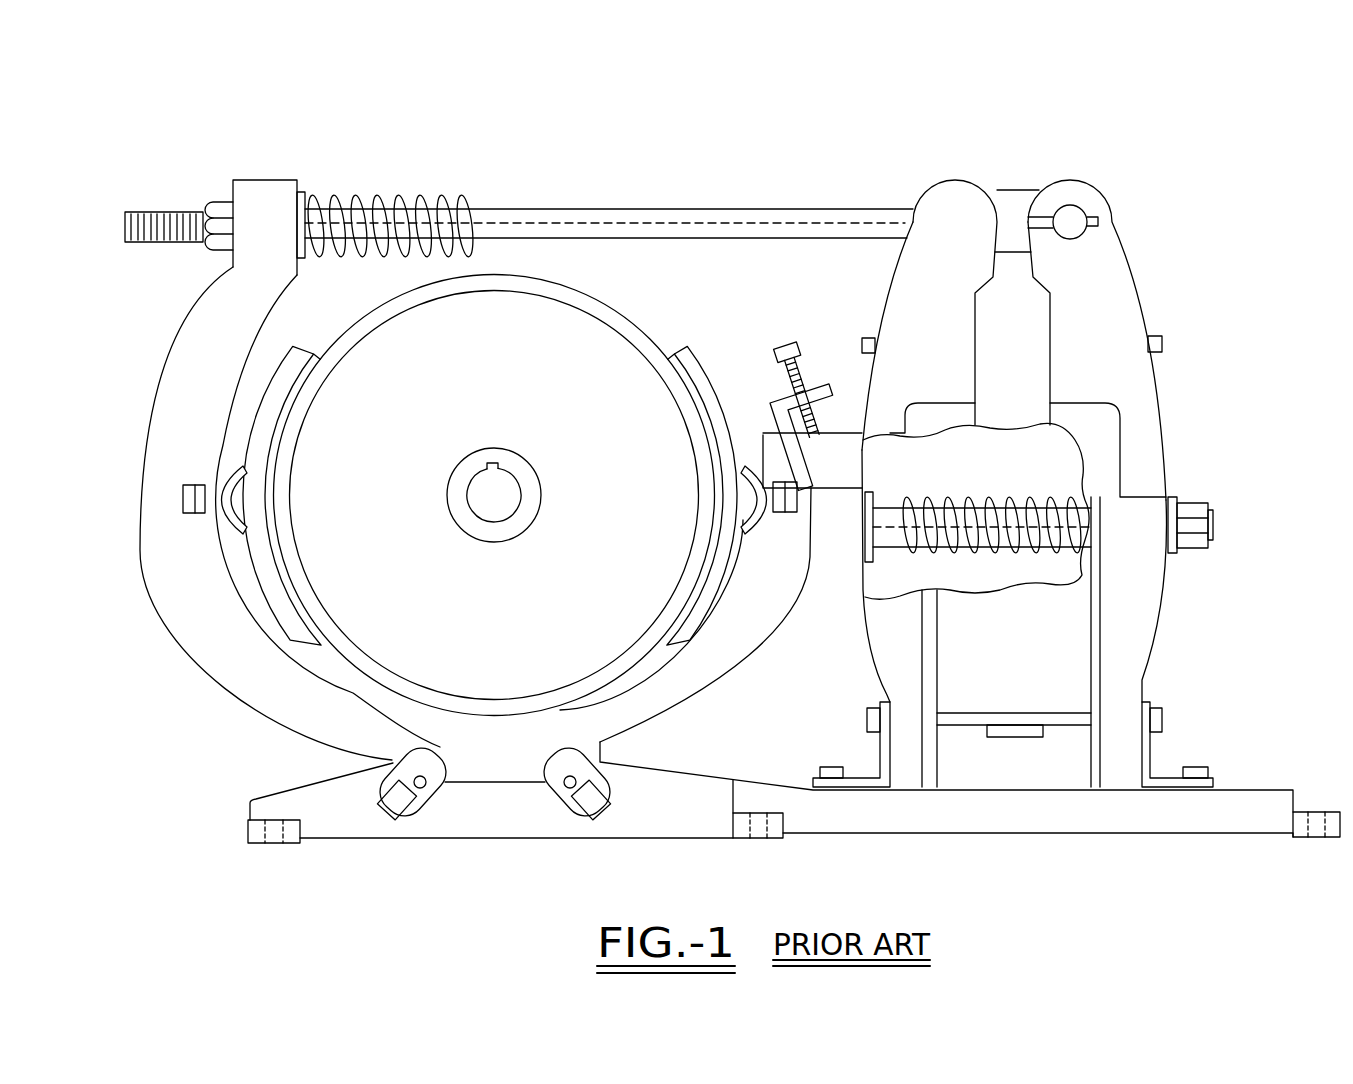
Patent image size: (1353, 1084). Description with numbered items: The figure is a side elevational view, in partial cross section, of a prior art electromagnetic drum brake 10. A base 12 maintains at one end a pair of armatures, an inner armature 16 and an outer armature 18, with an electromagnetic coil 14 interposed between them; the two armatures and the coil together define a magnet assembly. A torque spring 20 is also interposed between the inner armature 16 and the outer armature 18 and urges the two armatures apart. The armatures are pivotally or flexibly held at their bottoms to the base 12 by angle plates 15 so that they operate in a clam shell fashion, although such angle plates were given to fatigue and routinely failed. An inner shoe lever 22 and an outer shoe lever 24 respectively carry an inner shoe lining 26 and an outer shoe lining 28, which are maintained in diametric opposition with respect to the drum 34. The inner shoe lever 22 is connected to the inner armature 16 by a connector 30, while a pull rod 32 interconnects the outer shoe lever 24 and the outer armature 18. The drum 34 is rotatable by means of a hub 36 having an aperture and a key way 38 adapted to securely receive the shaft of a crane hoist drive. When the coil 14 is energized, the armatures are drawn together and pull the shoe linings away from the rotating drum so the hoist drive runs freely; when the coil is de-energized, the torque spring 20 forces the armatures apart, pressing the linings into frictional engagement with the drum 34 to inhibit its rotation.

The electromagnetic drum brake 10 is at (1098, 145).
The base 12 is at (1085, 823).
The electromagnetic coil 14 is at (1053, 652).
The angle plates 15 is at (887, 757).
The inner armature 16 is at (946, 190).
The outer armature 18 is at (1120, 216).
The torque spring 20 is at (980, 553).
The inner shoe lever 22 is at (735, 665).
The outer shoe lever 24 is at (233, 703).
The inner shoe lining 26 is at (693, 612).
The outer shoe lining 28 is at (270, 578).
The connector 30 is at (767, 440).
The pull rod 32 is at (655, 207).
The drum 34 is at (612, 305).
The hub 36 is at (540, 505).
The key way 38 is at (495, 463).